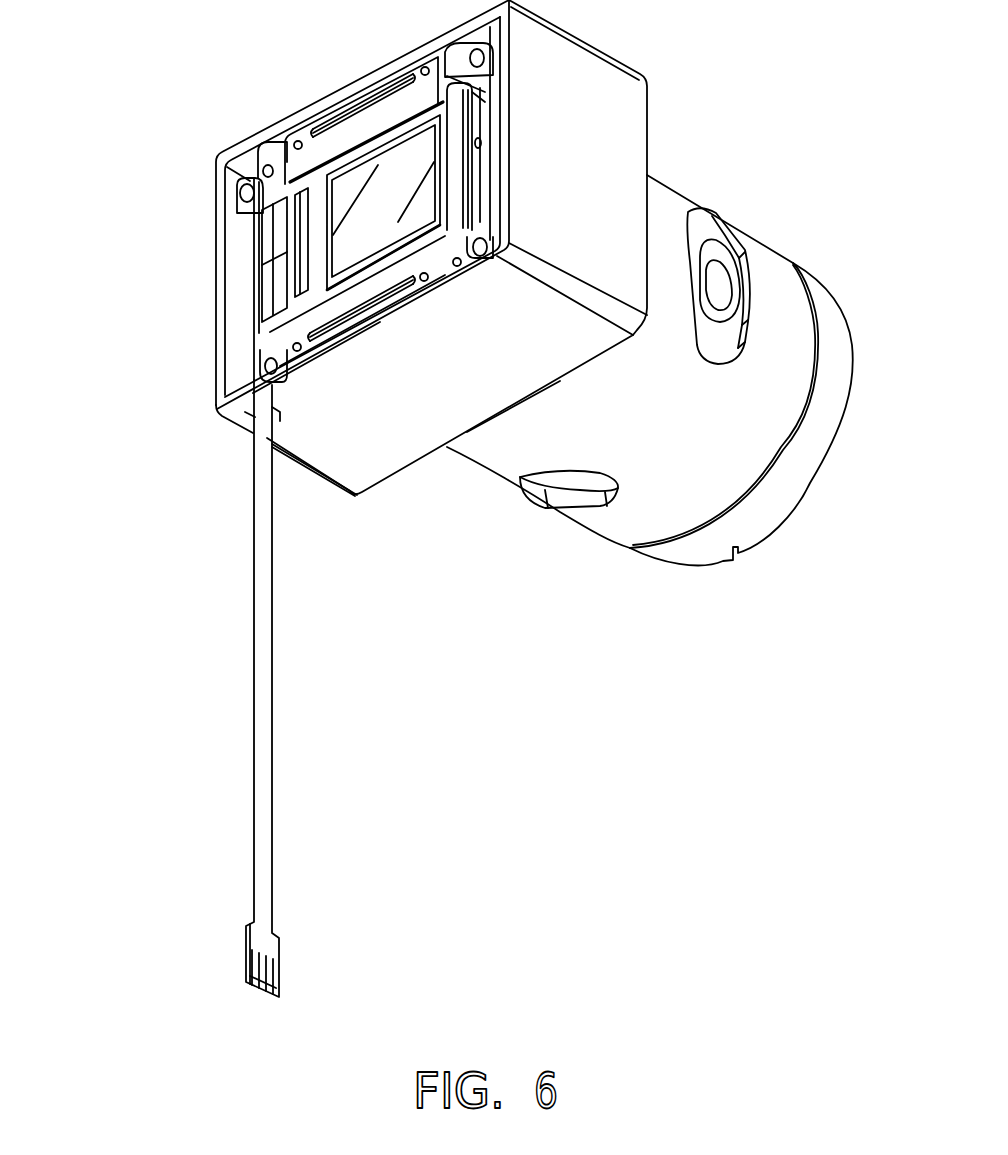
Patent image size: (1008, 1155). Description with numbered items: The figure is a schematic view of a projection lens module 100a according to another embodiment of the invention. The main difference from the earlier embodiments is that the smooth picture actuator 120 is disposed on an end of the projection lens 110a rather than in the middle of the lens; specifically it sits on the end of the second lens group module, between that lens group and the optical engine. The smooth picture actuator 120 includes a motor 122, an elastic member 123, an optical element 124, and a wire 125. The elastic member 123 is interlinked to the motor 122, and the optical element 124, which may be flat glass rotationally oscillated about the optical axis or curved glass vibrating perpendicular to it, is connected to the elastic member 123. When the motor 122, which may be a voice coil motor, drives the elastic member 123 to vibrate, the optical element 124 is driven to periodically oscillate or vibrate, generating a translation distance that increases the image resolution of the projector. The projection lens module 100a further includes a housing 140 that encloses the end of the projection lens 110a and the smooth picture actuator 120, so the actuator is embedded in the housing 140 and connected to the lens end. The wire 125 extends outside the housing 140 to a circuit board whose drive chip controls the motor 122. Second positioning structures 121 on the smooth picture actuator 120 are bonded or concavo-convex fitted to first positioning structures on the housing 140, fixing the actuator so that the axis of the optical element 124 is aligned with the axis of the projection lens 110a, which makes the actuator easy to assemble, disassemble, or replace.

The projection lens module 100a is at (850, 992).
The projection lens 110a is at (757, 243).
The smooth picture actuator 120 is at (122, 148).
The second positioning structures 121 is at (245, 193).
The motor 122 is at (268, 283).
The elastic member 123 is at (308, 243).
The optical element 124 is at (347, 190).
The wire 125 is at (265, 753).
The housing 140 is at (400, 447).